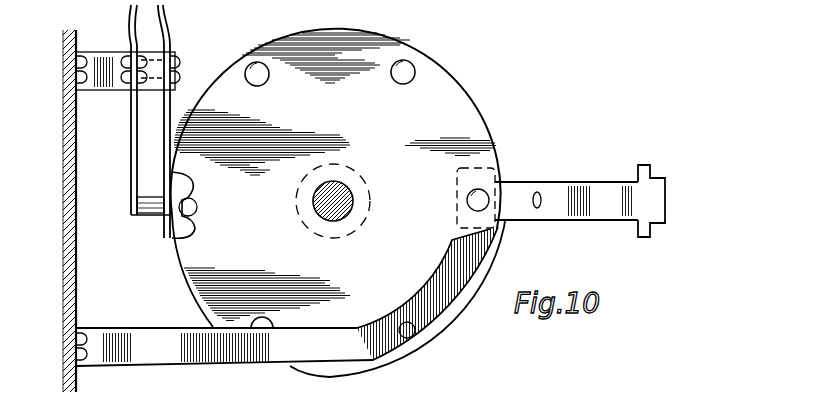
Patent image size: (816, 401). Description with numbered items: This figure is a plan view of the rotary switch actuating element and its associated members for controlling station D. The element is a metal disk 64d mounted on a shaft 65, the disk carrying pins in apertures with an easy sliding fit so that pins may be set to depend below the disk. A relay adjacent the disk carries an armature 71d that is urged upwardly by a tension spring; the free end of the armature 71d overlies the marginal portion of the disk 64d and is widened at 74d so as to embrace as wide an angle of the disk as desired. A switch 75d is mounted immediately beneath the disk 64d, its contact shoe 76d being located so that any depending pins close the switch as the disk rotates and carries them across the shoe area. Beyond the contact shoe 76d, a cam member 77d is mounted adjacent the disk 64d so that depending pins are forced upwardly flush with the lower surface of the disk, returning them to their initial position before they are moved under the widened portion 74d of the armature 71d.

The disk 64d is at (443, 100).
The shaft 65 is at (318, 216).
The armature 71d is at (558, 196).
The widened portion of armature 74d is at (482, 176).
The switch 75d is at (148, 128).
The contact shoe 76d is at (173, 262).
The cam member 77d is at (168, 342).